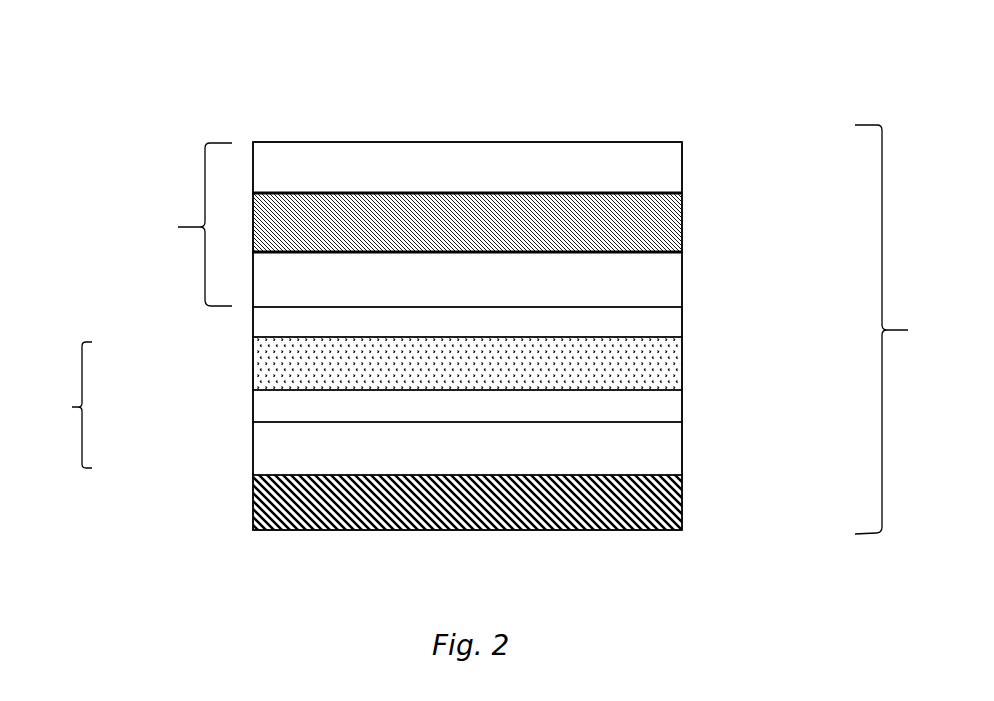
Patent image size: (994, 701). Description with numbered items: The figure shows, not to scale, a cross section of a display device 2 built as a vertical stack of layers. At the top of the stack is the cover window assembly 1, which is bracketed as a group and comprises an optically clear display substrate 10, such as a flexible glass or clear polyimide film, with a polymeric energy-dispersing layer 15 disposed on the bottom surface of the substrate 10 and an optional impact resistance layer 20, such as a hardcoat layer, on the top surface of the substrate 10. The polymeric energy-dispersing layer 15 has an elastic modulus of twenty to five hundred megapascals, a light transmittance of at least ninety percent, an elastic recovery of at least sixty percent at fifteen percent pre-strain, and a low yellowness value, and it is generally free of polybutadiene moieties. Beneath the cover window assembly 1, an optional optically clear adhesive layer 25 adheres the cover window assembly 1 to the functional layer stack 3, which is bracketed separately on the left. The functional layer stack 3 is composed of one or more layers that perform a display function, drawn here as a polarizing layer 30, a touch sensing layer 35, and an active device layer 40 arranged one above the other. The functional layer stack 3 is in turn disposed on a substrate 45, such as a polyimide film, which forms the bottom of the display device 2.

The cover window assembly 1 is at (187, 224).
The display device 2 is at (901, 329).
The functional layer stack 3 is at (62, 405).
The optically clear display substrate 10 is at (683, 225).
The polymeric energy-dispersing layer 15 is at (683, 285).
The impact resistance layer 20 is at (398, 142).
The optically clear adhesive layer 25 is at (253, 323).
The polarizing layer 30 is at (683, 367).
The touch sensing layer 35 is at (253, 403).
The active device layer 40 is at (683, 448).
The substrate 45 is at (253, 500).